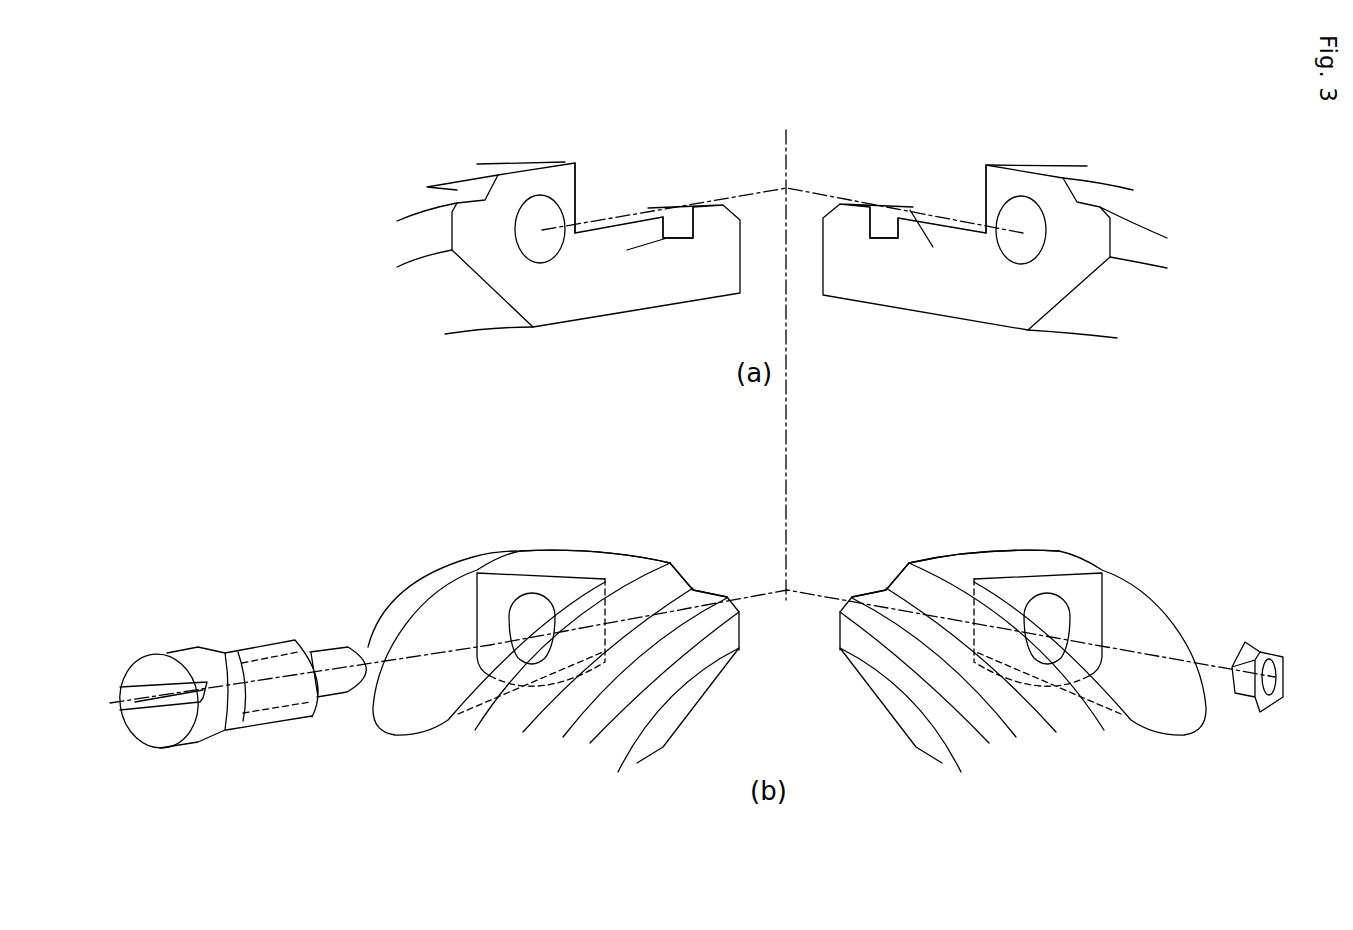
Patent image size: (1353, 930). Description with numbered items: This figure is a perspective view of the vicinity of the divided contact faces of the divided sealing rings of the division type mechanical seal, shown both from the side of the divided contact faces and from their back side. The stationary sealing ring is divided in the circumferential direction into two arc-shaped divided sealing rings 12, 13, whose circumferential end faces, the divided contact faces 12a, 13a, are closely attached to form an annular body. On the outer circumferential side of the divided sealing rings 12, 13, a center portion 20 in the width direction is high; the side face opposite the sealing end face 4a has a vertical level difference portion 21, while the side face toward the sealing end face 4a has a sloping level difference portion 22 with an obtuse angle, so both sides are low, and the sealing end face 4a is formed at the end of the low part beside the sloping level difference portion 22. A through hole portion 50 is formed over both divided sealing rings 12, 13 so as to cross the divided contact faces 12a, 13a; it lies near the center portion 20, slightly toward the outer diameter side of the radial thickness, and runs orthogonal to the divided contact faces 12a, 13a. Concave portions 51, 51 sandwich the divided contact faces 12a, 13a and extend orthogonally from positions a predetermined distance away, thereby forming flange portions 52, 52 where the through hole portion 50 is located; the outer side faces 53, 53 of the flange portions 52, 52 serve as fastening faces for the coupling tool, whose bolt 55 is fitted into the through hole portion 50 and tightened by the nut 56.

The sealing end face 4a is at (417, 240).
The divided sealing ring 12 is at (883, 355).
The divided contact face 12a is at (912, 212).
The divided sealing ring 13 is at (673, 355).
The divided contact face 13a is at (667, 205).
The center portion 20 is at (527, 166).
The vertical level difference portion 21 is at (580, 197).
The sloping level difference portion 22 is at (427, 187).
The through hole portion 50 is at (533, 238).
The concave portion 51 is at (438, 670).
The flange portion 52 is at (597, 558).
The outer side face 53 is at (560, 583).
The bolt 55 is at (253, 650).
The nut 56 is at (1258, 648).